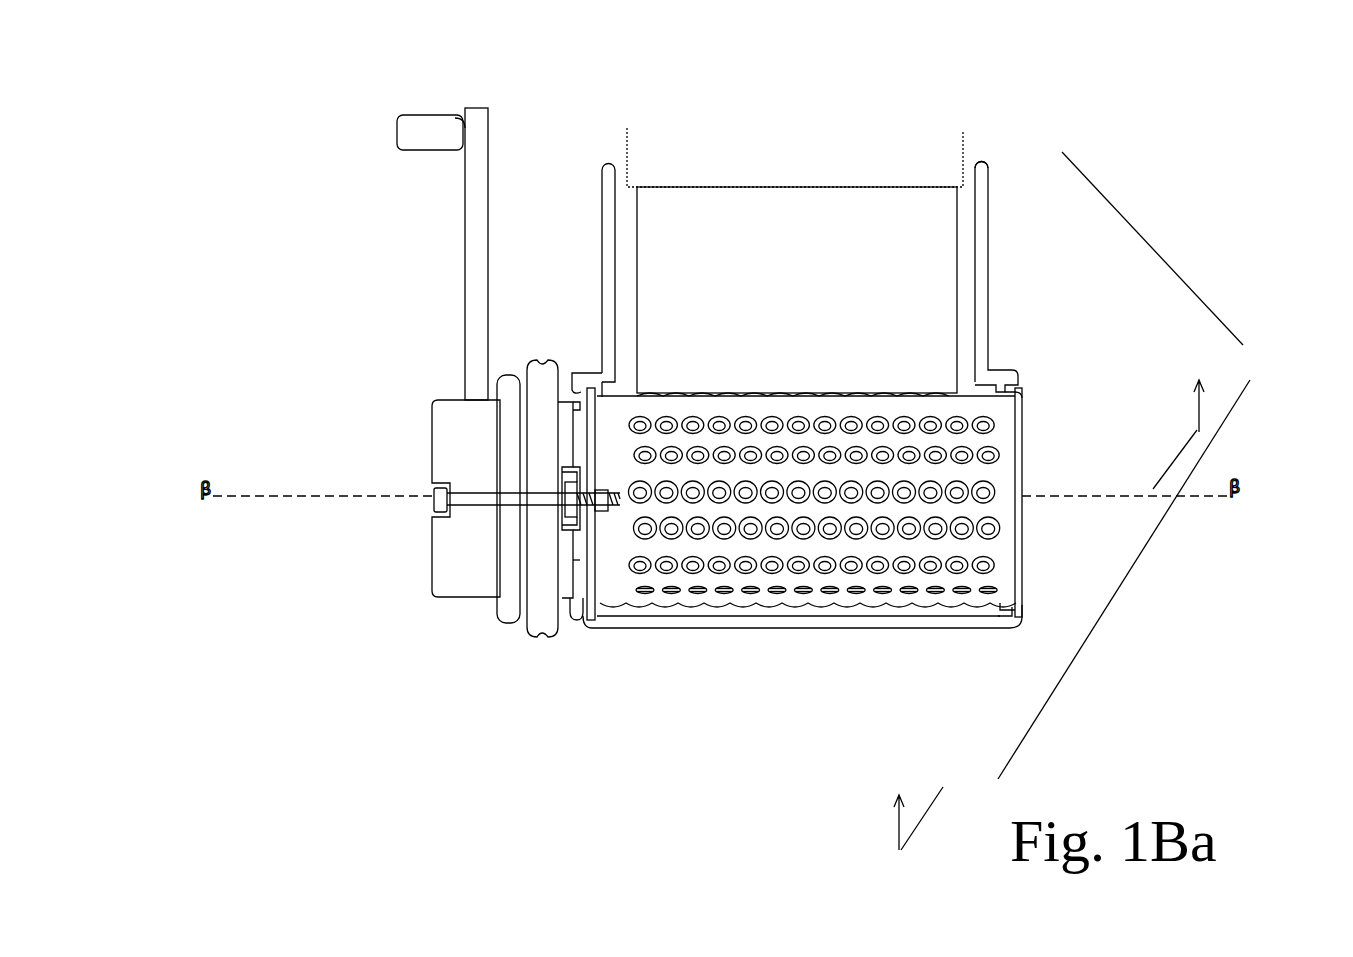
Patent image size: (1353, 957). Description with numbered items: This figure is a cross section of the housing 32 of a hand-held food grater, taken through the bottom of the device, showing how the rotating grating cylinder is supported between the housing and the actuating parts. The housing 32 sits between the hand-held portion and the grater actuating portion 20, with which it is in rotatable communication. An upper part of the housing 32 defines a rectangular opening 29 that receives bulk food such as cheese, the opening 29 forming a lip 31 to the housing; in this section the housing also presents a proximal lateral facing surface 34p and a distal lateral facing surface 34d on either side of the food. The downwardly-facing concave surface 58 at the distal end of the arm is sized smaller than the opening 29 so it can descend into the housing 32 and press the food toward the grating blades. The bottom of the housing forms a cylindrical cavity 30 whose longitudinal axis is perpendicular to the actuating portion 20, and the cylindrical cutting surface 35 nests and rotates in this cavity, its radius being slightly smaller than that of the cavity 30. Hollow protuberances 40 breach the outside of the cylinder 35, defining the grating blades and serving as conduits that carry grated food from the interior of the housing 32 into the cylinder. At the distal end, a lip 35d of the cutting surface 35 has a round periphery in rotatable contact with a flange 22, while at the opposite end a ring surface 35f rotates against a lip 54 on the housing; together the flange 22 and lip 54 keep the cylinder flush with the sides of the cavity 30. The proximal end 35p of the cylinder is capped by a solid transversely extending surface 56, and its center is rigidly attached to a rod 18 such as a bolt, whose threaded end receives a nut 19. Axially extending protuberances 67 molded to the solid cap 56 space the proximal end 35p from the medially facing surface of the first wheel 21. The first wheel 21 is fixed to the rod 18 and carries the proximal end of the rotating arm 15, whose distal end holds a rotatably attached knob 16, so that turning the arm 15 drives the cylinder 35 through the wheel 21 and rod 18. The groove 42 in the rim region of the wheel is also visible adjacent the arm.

The rotating arm 15 is at (465, 128).
The knob 16 is at (422, 128).
The rod 18 is at (475, 497).
The nut 19 is at (595, 490).
The grater actuating portion 20 is at (474, 288).
The first wheel 21 is at (553, 453).
The flange 22 is at (1016, 392).
The opening 29 is at (618, 170).
The cylindrical cavity 30 is at (980, 612).
The lip 31 is at (988, 162).
The housing 32 is at (1087, 501).
The proximal lateral facing surface 34p is at (606, 253).
The distal lateral facing surface 34d is at (984, 278).
The cylindrical cutting surface 35 is at (613, 573).
The proximal end of the cylinder 35p is at (570, 592).
The ring surface 35f is at (601, 572).
The lip at the distal end 35d is at (1020, 455).
The protuberances 40 is at (880, 560).
The drive wheel 42 is at (541, 358).
The lip on the housing 54 is at (577, 380).
The solid transversely extending surface 56 is at (573, 560).
The downwardly-facing concave surface 58 is at (862, 160).
The axially extending protuberances 67 is at (573, 470).